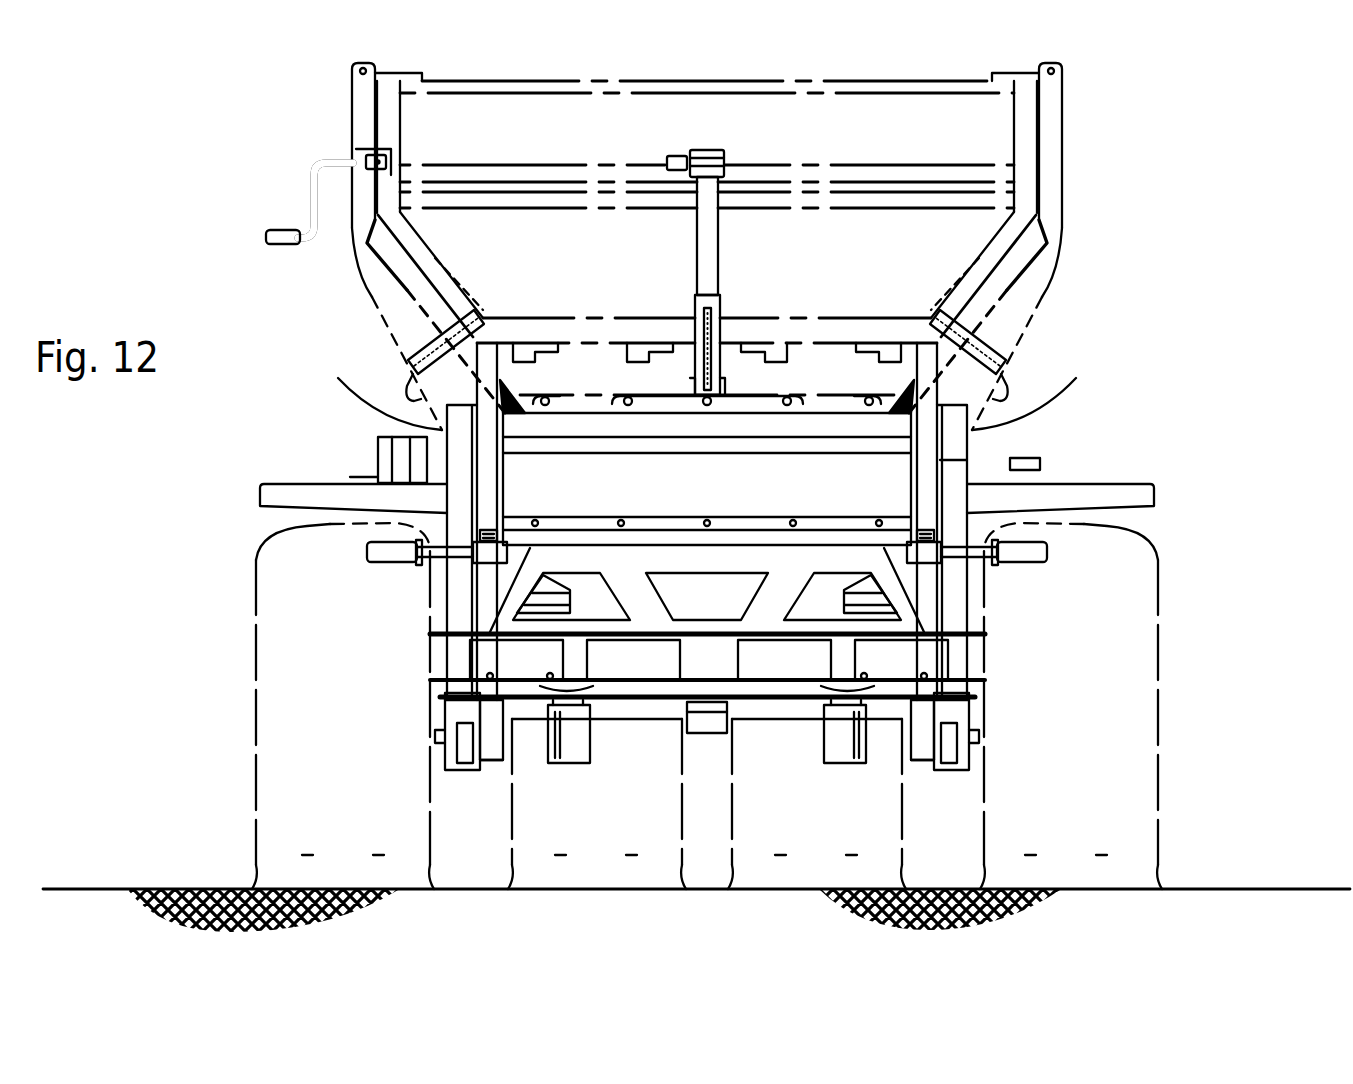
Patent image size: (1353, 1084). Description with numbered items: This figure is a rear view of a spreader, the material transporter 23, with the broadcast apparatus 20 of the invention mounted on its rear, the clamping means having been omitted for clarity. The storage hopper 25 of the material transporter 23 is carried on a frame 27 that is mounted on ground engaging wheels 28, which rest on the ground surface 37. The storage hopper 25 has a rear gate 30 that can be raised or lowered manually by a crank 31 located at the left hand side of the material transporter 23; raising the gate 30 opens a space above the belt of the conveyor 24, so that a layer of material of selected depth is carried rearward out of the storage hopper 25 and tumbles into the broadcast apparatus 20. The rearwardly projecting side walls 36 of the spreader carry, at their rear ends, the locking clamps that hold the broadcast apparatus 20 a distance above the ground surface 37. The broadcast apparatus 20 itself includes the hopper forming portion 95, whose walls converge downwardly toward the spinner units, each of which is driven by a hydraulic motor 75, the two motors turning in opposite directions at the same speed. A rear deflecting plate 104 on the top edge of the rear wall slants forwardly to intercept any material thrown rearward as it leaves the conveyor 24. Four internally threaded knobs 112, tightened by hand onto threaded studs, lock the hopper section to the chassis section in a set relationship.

The broadcast apparatus 20 is at (1130, 482).
The material transporter 23 is at (1112, 188).
The conveyor 24 is at (882, 412).
The storage hopper 25 is at (1042, 147).
The frame 27 is at (966, 458).
The ground engaging wheels 28 is at (707, 706).
The rear gate 30 is at (930, 246).
The crank 31 is at (307, 198).
The side walls 36 is at (483, 432).
The ground surface 37 is at (207, 889).
The hydraulic motor 75 is at (590, 748).
The hopper forming portion 95 is at (940, 616).
The rear deflecting plate 104 is at (1000, 526).
The internally threaded knobs 112 is at (415, 538).